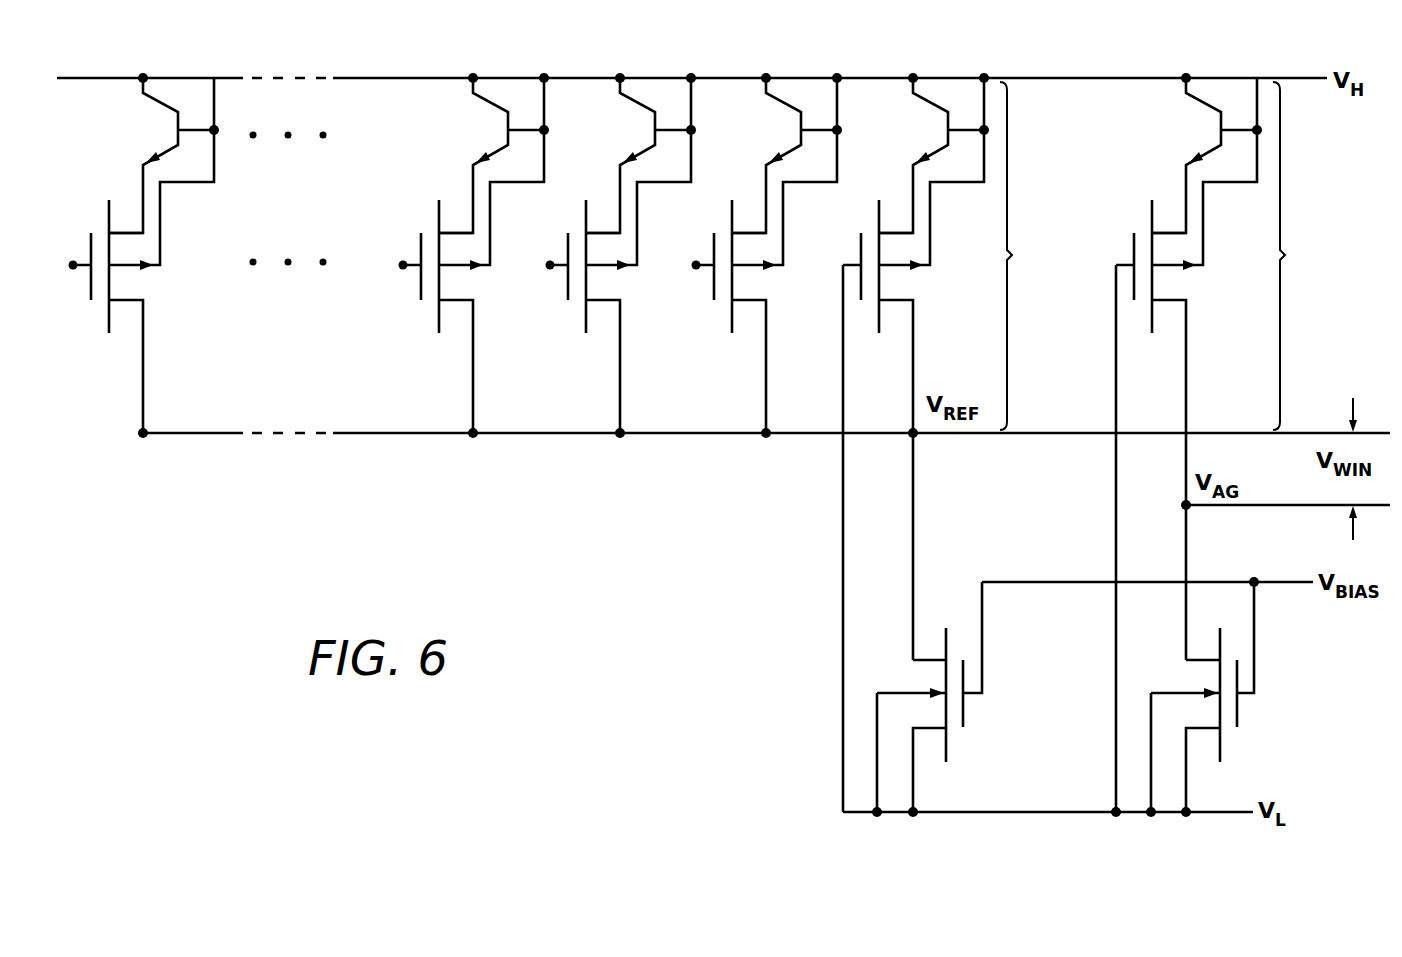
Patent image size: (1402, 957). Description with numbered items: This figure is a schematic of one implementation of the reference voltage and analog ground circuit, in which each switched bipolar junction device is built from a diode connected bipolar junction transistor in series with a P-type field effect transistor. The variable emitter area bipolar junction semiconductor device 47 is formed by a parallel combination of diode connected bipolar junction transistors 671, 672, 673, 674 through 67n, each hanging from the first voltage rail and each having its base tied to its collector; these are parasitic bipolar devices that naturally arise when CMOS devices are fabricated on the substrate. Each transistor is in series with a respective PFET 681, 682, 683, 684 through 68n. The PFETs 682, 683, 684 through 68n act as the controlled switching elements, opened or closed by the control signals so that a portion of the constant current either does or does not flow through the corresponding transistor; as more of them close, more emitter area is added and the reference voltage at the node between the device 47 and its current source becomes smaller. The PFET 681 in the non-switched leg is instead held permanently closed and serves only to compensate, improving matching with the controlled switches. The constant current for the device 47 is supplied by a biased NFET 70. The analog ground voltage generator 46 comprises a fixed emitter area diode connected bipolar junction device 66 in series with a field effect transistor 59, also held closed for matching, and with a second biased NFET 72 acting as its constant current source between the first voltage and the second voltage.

The diode connected bipolar junction transistor 67n is at (160, 103).
The diode connected bipolar junction transistor 674 is at (490, 103).
The diode connected bipolar junction transistor 673 is at (637, 103).
The diode connected bipolar junction transistor 672 is at (783, 103).
The diode connected bipolar junction transistor 671 is at (930, 103).
The fixed emitter area bipolar junction device 66 is at (1205, 103).
The P-type field effect transistor 68n is at (109, 322).
The P-type field effect transistor 684 is at (439, 322).
The P-type field effect transistor 683 is at (586, 322).
The P-type field effect transistor 682 is at (732, 322).
The P-type field effect transistor 681 is at (879, 280).
The field effect transistor 59 is at (1152, 212).
The variable emitter area bipolar junction semiconductor device 47 is at (1023, 256).
The analog ground voltage generator 46 is at (1294, 256).
The biased MOS N-type field effect transistor 70 is at (963, 714).
The biased MOS N-type field effect transistor 72 is at (1237, 722).